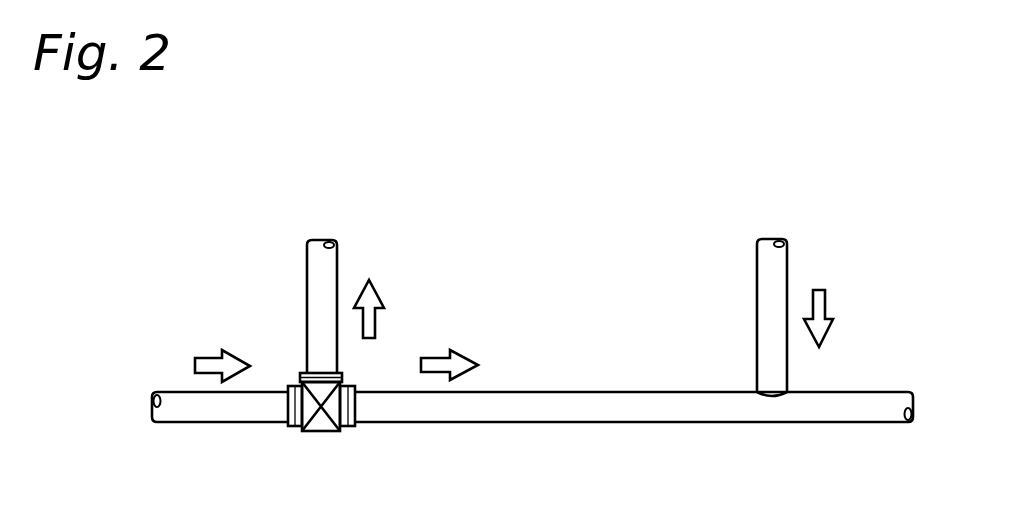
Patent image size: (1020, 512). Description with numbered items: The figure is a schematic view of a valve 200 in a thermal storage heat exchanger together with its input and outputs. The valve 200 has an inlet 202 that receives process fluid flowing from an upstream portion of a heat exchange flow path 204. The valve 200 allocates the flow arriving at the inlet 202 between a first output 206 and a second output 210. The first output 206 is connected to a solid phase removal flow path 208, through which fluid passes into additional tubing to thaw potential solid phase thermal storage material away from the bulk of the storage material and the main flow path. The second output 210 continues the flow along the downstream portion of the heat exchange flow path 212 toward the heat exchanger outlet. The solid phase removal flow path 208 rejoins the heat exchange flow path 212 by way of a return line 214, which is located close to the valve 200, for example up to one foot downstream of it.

The valve 200 is at (303, 428).
The inlet 202 is at (288, 408).
The upstream portion of heat exchange flow path 204 is at (173, 392).
The first output 206 is at (323, 370).
The solid phase removal flow path 208 is at (337, 253).
The second output 210 is at (355, 400).
The downstream portion of heat exchange flow path 212 is at (533, 422).
The return line 214 is at (787, 253).